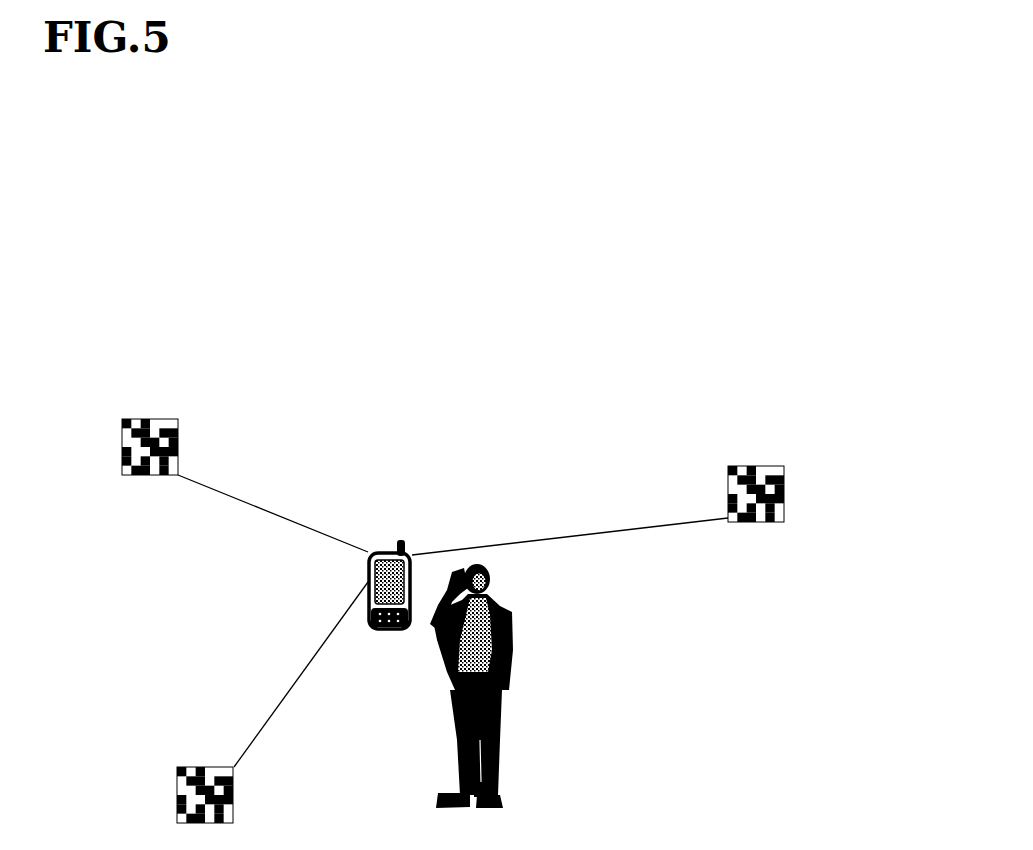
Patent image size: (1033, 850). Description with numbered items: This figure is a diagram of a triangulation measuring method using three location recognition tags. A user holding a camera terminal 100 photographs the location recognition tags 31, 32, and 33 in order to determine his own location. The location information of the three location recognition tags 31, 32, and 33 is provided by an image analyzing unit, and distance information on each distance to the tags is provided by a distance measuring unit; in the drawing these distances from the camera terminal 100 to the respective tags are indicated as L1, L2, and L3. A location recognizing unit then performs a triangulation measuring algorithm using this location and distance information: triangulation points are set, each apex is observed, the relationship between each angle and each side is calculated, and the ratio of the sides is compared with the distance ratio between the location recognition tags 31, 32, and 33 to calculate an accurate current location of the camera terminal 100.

The location recognition tag 31 is at (121, 478).
The location recognition tag 32 is at (176, 765).
The location recognition tag 33 is at (787, 465).
The distance to first marker L1 is at (296, 519).
The distance to second marker L2 is at (296, 678).
The distance to third marker L3 is at (559, 536).
The camera terminal 100 is at (391, 636).